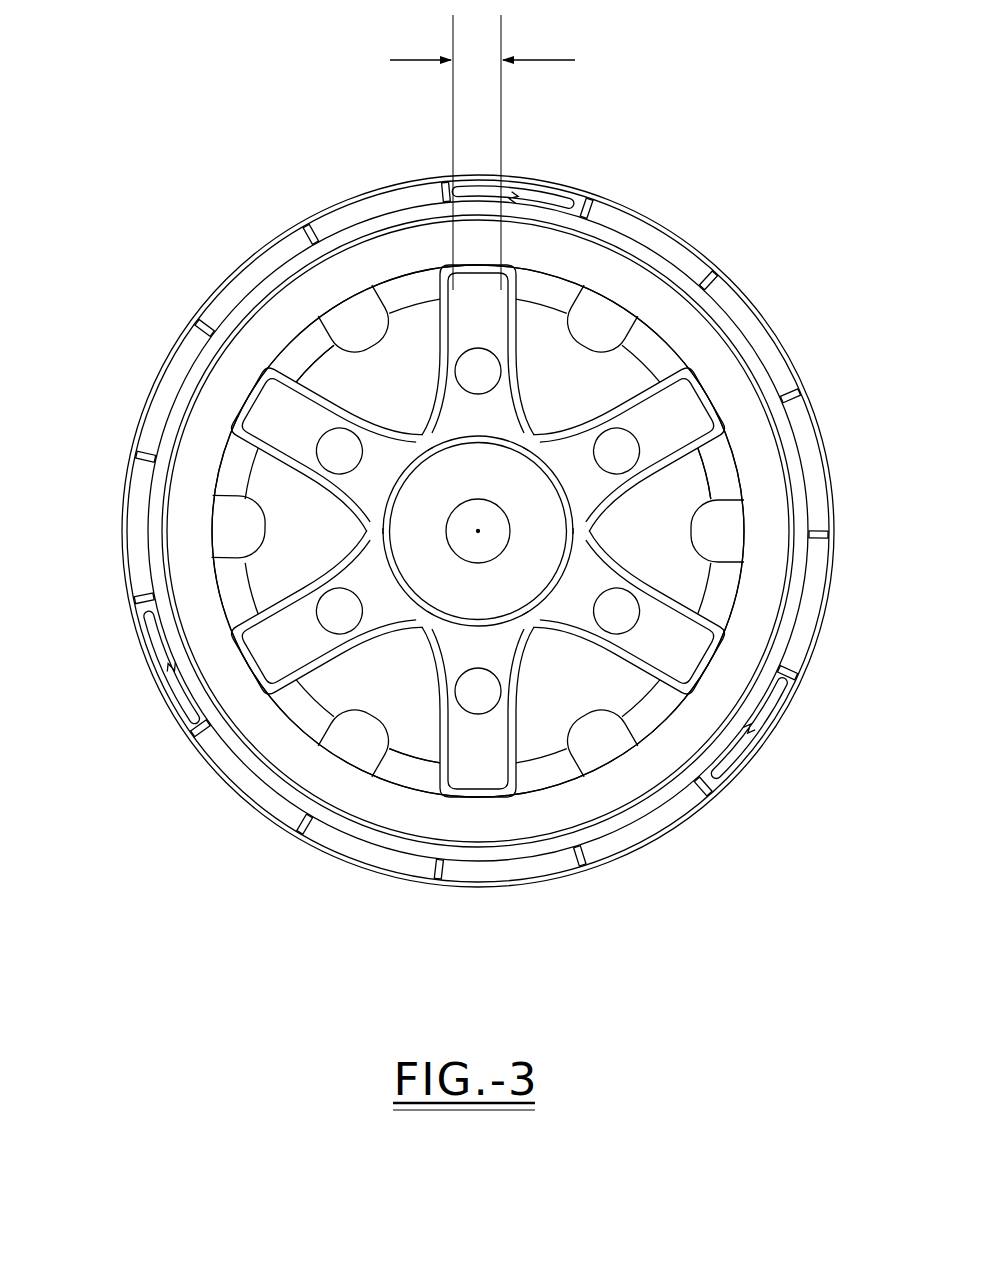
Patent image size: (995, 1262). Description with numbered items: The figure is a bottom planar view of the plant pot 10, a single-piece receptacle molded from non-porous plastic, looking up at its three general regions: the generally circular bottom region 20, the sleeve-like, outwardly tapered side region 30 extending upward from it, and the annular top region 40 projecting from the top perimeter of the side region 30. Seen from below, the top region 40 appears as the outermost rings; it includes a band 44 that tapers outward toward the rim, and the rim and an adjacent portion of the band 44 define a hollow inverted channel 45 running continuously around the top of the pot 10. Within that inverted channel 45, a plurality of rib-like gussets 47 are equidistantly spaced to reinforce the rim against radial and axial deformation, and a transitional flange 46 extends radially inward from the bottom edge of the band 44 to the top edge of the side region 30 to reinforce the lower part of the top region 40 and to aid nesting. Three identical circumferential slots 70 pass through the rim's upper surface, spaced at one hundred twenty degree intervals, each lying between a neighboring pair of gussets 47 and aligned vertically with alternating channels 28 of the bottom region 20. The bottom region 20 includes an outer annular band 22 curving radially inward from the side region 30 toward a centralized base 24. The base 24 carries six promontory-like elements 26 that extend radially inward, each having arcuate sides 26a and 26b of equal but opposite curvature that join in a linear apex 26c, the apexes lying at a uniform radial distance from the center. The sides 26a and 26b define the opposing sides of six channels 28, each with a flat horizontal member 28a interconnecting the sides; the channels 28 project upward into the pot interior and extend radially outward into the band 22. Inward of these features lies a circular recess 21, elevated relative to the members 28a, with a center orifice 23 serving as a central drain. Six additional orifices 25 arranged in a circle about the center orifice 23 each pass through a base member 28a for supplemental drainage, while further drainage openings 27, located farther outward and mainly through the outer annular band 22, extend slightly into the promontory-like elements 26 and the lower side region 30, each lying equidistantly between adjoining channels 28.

The plant pot 10 is at (421, 170).
The bottom region 20 is at (392, 274).
The circular recess 21 is at (459, 488).
The outer annular band 22 is at (540, 290).
The center orifice 23 is at (483, 538).
The centralized base 24 is at (627, 366).
The additional orifices 25 is at (478, 658).
The promontory-like elements 26 is at (297, 541).
The arcuate side 26a is at (288, 598).
The arcuate side 26b is at (290, 456).
The linear apex 26c is at (424, 438).
The drainage openings 27 is at (344, 314).
The channels 28 is at (484, 532).
The flat horizontal member 28a is at (662, 640).
The side region 30 is at (279, 301).
The top region 40 is at (195, 309).
The band 44 is at (250, 757).
The inverted channel 45 is at (805, 437).
The transitional flange 46 is at (240, 771).
The gussets 47 is at (792, 397).
The slots 70 is at (503, 188).